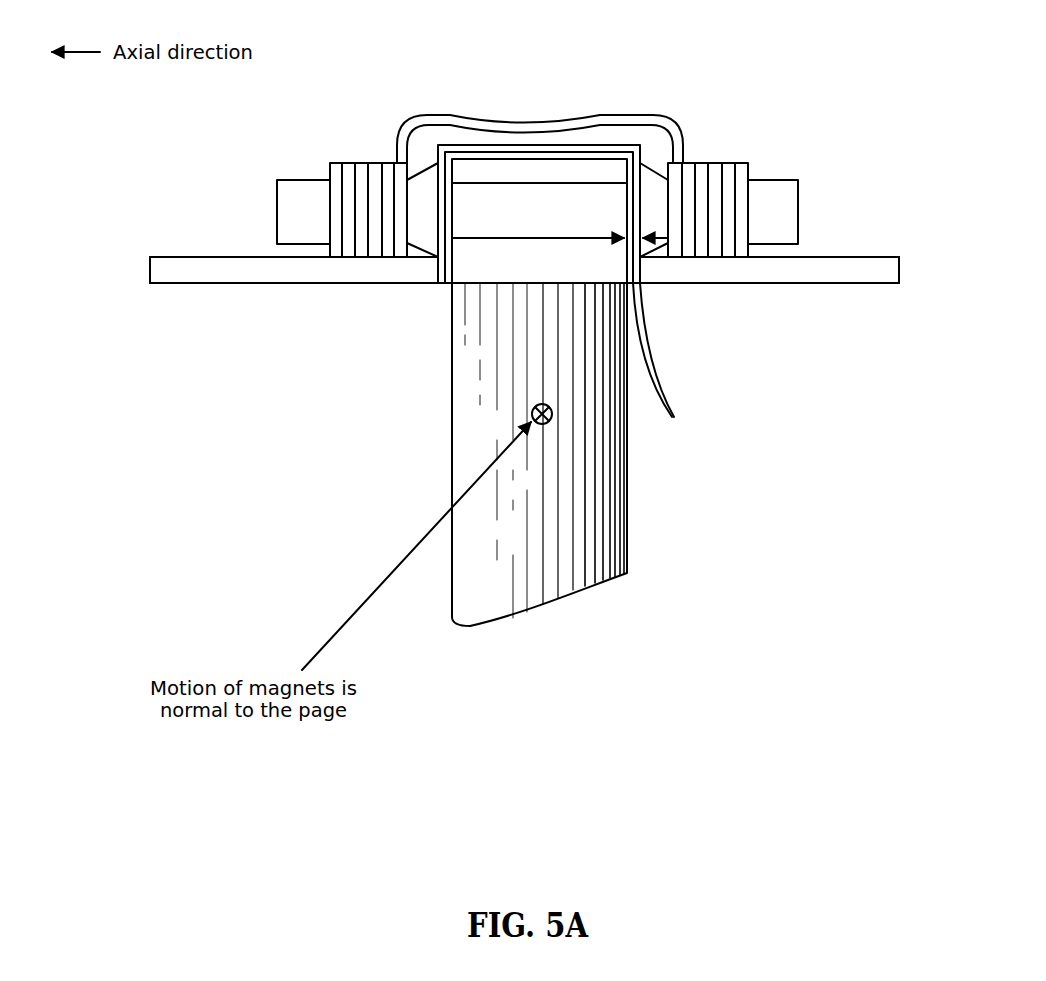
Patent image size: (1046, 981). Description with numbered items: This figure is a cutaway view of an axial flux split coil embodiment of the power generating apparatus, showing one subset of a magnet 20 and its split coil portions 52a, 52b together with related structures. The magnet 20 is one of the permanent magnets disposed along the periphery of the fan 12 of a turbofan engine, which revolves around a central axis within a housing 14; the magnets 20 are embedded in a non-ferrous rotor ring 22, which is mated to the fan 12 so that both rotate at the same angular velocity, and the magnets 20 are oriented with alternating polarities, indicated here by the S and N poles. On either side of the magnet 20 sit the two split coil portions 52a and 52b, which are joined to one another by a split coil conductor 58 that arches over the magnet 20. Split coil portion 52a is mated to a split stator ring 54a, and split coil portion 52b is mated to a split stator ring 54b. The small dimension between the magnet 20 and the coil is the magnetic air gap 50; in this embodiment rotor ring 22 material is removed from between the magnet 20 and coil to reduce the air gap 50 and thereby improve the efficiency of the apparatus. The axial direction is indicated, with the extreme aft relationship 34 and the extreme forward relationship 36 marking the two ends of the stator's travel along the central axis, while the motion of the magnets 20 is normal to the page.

The fan 12 is at (527, 507).
The housing 14 is at (273, 272).
The permanent magnet 20 is at (535, 212).
The rotor ring 22 is at (488, 254).
The extreme aft relationship 34 is at (929, 281).
The extreme forward relationship 36 is at (91, 285).
The magnetic air gap 50 is at (663, 364).
The split coil portion 52a is at (362, 163).
The split coil portion 52b is at (703, 163).
The split stator ring 54a is at (277, 197).
The split stator ring 54b is at (800, 210).
The split coil conductor 58 is at (470, 113).